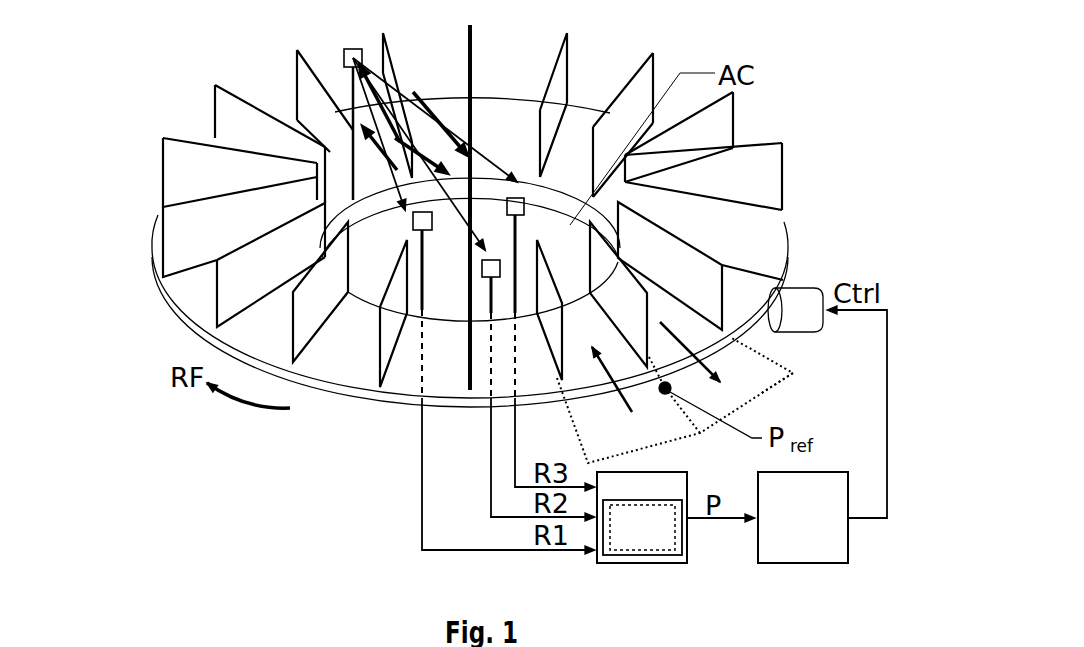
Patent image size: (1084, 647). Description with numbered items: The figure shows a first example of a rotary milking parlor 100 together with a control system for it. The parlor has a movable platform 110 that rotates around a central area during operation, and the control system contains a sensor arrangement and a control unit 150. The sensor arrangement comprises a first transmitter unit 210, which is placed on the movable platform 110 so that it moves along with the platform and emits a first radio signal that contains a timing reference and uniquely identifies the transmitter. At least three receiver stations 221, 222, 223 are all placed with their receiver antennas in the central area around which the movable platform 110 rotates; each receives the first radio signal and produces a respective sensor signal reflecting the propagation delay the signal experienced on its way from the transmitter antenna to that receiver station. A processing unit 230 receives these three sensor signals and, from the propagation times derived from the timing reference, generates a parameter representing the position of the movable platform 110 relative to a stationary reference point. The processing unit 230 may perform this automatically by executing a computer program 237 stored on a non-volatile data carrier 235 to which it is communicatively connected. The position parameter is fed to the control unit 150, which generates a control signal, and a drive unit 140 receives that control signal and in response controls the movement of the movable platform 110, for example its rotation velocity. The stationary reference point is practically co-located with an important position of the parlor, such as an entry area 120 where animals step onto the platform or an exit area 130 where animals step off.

The rotary milking parlor 100 is at (193, 65).
The movable platform 110 is at (187, 317).
The entry area 120 is at (660, 428).
The exit area 130 is at (743, 378).
The drive unit 140 is at (798, 303).
The control unit 150 is at (802, 563).
The first transmitter unit 210 is at (347, 49).
The receiver station 221 is at (415, 229).
The receiver station 222 is at (482, 276).
The receiver station 223 is at (547, 227).
The processing unit 230 is at (625, 565).
The non-volatile data carrier 235 is at (642, 553).
The computer program 237 is at (642, 527).